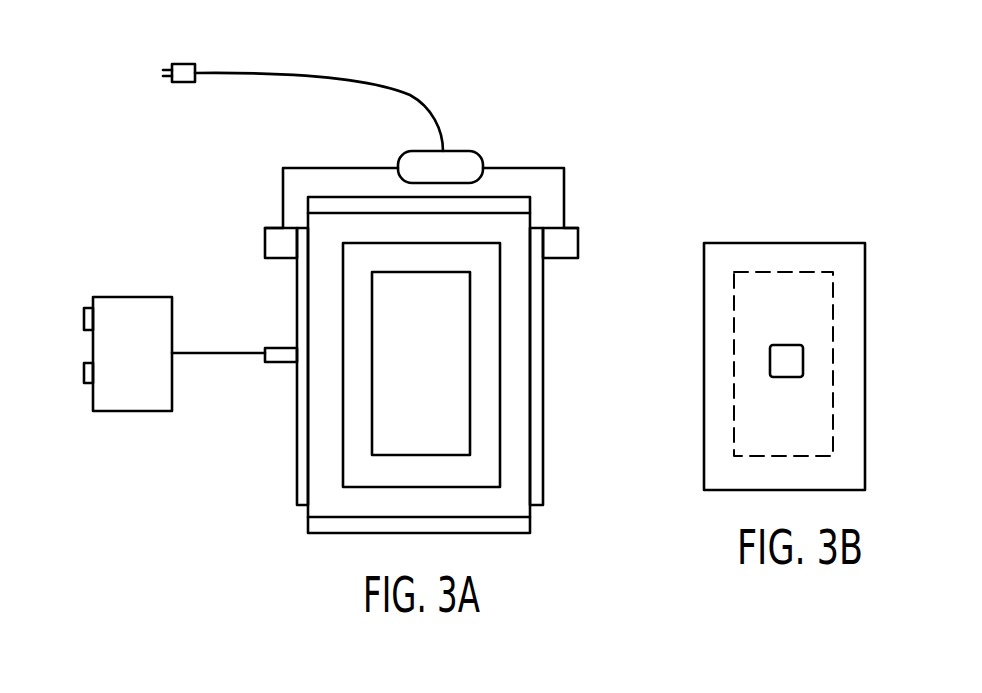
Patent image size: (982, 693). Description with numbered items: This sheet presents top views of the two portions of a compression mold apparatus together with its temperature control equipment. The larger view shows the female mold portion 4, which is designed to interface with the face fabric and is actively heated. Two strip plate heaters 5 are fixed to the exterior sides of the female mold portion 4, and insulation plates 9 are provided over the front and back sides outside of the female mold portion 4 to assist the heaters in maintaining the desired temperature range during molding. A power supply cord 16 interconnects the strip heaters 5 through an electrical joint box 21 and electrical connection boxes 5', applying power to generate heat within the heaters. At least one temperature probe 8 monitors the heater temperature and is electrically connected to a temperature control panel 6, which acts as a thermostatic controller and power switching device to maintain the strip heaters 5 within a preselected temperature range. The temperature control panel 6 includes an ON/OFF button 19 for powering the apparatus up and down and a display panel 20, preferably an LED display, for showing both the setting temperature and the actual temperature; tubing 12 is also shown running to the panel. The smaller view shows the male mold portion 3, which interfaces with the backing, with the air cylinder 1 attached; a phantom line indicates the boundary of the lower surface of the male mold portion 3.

In FIG. 3B, the air cylinder 1 is at (777, 348).
In FIG. 3B, the male mold portion 3 is at (850, 395).
In FIG. 3A, the female mold portion 4 is at (518, 387).
In FIG. 3A, the strip plate heaters 5 is at (414, 366).
In FIG. 3A, the electrical connection boxes 5' is at (415, 238).
In FIG. 3A, the temperature control panel 6 is at (140, 372).
In FIG. 3A, the temperature probe 8 is at (275, 364).
In FIG. 3A, the insulation plates 9 is at (503, 203).
In FIG. 3A, the tubing 12 is at (215, 355).
In FIG. 3A, the power supply cord 16 is at (393, 92).
In FIG. 3A, the ON/OFF button 19 is at (83, 318).
In FIG. 3A, the display panel 20 is at (83, 368).
In FIG. 3A, the electrical joint box 21 is at (460, 153).